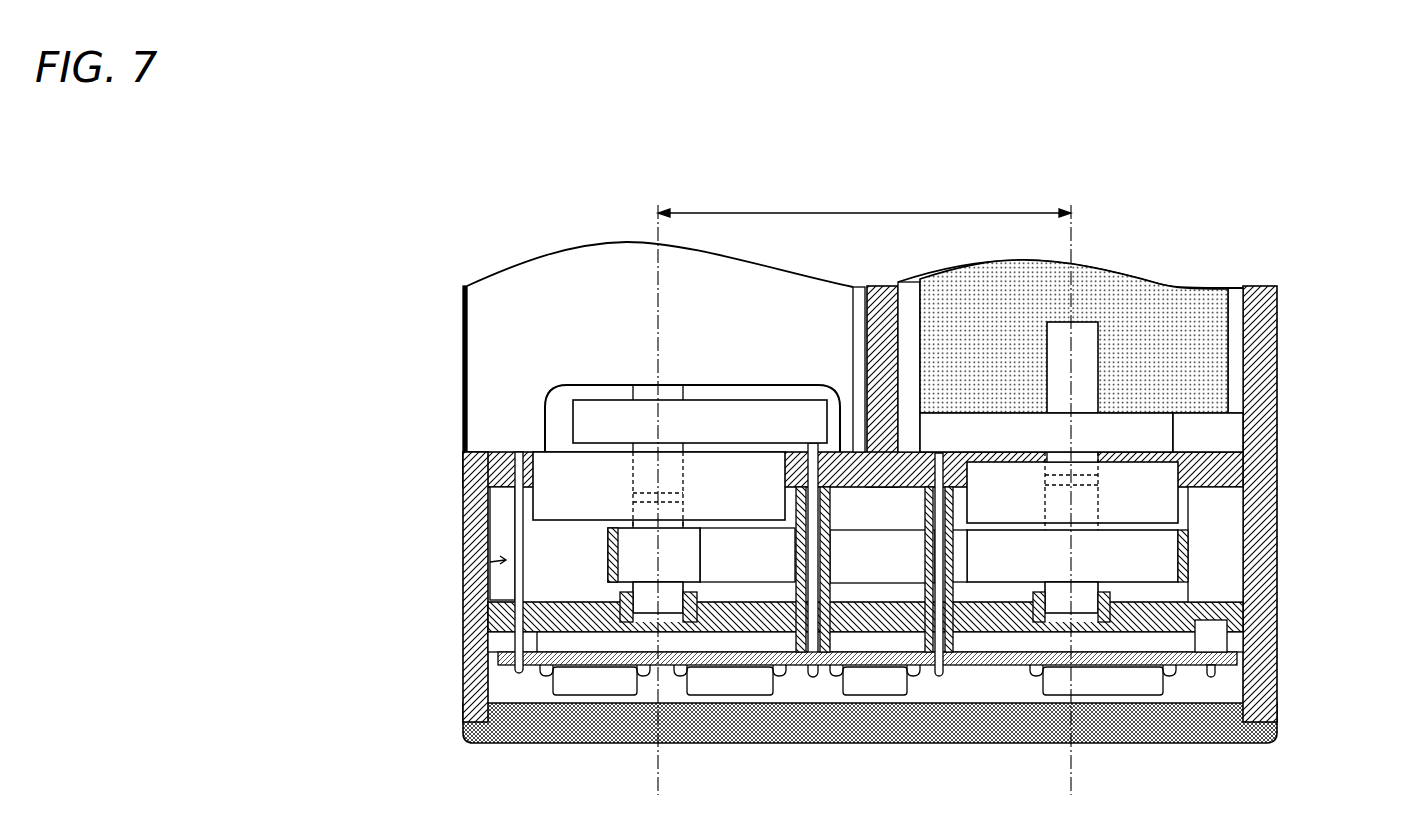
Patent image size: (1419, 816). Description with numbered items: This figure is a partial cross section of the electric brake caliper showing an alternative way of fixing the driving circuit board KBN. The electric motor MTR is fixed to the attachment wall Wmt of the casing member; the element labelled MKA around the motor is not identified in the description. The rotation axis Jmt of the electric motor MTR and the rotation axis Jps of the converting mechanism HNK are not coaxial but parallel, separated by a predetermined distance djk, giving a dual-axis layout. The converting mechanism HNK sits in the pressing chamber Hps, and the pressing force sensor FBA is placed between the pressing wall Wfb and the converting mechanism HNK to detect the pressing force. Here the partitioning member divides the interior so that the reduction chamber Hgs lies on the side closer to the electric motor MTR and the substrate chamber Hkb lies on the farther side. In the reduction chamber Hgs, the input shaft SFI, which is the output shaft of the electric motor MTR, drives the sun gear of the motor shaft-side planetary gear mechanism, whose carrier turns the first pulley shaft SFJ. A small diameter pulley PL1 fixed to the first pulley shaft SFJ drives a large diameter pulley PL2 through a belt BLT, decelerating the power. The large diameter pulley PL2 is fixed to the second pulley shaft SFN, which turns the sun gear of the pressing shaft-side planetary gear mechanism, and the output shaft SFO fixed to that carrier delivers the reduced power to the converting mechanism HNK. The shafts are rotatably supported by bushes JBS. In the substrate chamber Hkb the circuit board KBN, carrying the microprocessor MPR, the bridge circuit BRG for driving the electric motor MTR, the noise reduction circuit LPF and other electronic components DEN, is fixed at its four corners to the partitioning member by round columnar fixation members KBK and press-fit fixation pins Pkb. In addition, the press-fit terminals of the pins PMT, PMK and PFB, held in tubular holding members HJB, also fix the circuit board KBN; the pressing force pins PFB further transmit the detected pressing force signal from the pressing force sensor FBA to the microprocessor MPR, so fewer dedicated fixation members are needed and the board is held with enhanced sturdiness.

The electric motor MTR is at (463, 372).
The power converting mechanism HNK is at (1212, 382).
The fixation member KBK is at (1277, 650).
The fixation pin Pkb is at (1277, 673).
The substrate chamber Hkb is at (498, 745).
The rotation axis of the electric motor Jmt is at (653, 763).
The rotation axis of the converting mechanism Jps is at (1073, 763).
The predetermined distance djk is at (864, 203).
The pressing chamber Hps is at (906, 294).
The output shaft SFO is at (1098, 372).
The pressing force sensor FBA is at (1046, 432).
The pressing wall Wfb is at (1183, 446).
The attachment wall Wmt is at (473, 447).
The motor cover MKA is at (692, 418).
The input shaft SFI is at (633, 490).
The second pulley shaft SFN is at (1045, 500).
The pin PMT is at (517, 530).
The reduction chamber Hgs is at (463, 573).
The small diameter pulley PL1 is at (654, 571).
The large diameter pulley PL2 is at (1077, 576).
The holding member HJB is at (490, 640).
The belt BLT is at (858, 530).
The pin PMK is at (822, 540).
The pressing force pin PFB is at (938, 540).
The first pulley shaft SFJ is at (620, 592).
The bush JBS is at (690, 596).
The noise reduction circuit LPF is at (595, 681).
The microprocessor MPR is at (730, 681).
The other electronic components DEN is at (875, 681).
The circuit board KBN is at (960, 667).
The bridge circuit BRG is at (1103, 681).